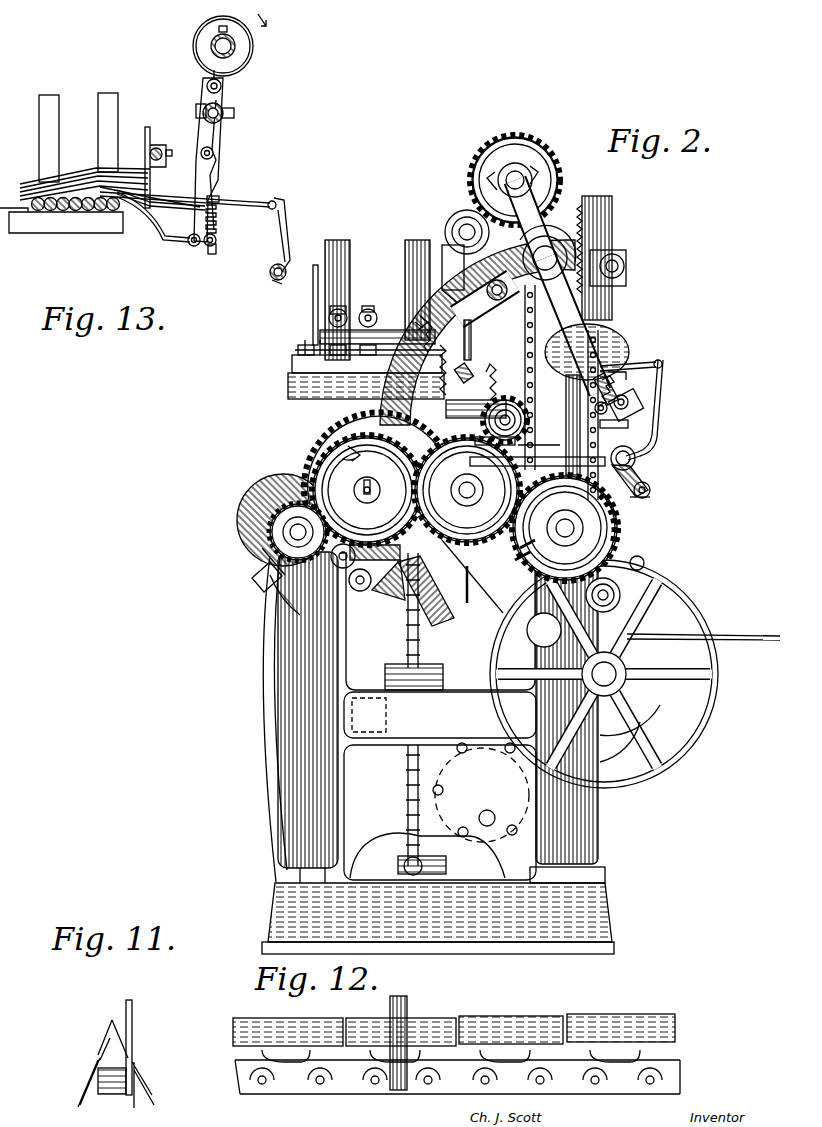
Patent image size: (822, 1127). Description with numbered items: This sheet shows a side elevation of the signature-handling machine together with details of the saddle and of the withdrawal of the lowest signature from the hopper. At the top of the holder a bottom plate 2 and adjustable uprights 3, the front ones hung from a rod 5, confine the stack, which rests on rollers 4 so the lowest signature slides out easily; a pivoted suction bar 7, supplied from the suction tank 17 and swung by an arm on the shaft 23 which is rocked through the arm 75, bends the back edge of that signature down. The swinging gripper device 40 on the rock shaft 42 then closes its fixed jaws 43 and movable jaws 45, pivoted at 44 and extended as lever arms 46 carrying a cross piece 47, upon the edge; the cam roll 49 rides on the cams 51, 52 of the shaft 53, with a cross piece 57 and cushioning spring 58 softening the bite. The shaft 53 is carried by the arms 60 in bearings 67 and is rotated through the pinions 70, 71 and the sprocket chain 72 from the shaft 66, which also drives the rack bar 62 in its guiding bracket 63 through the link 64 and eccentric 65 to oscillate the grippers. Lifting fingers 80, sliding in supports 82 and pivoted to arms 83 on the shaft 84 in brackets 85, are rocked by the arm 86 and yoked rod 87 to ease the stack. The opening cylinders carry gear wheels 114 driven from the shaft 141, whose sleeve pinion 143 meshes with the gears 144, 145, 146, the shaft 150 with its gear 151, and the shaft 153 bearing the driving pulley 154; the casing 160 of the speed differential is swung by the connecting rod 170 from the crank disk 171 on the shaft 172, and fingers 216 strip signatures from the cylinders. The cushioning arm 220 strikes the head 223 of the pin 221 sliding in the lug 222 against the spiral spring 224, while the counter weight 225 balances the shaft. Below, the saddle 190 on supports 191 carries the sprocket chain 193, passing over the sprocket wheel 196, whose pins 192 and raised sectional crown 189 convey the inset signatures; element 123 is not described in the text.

In FIG. 13, the bottom plate 2 is at (85, 230).
In FIG. 2, the uprights 3 is at (406, 252).
In FIG. 13, the uprights 3 is at (52, 128).
In FIG. 2, the rollers 4 is at (300, 355).
In FIG. 13, the rod 5 is at (158, 146).
In FIG. 2, the bar 7 is at (450, 400).
In FIG. 2, the suction tank 17 is at (456, 766).
In FIG. 2, the shaft 23 is at (462, 228).
In FIG. 13, the swinging gripper device 40 is at (200, 182).
In FIG. 13, the rock shaft 42 is at (224, 116).
In FIG. 2, the gripper jaws 43 is at (537, 430).
In FIG. 13, the gripper jaws 43 is at (161, 204).
In FIG. 2, the pivot 44 is at (614, 434).
In FIG. 13, the pivot 44 is at (190, 245).
In FIG. 2, the movable jaws 45 is at (570, 428).
In FIG. 13, the movable jaws 45 is at (170, 238).
In FIG. 13, the lever arms 46 is at (206, 246).
In FIG. 2, the cross piece 47 is at (645, 392).
In FIG. 13, the cross piece 47 is at (216, 242).
In FIG. 13, the cam roll 49 is at (206, 82).
In FIG. 13, the cam 51 is at (196, 44).
In FIG. 13, the cam 52 is at (265, 52).
In FIG. 2, the shaft 53 is at (508, 180).
In FIG. 13, the shaft 53 is at (208, 50).
In FIG. 13, the cross piece 57 is at (220, 197).
In FIG. 2, the cushioning spring 58 is at (625, 386).
In FIG. 13, the cushioning spring 58 is at (218, 220).
In FIG. 13, the arms 60 is at (232, 88).
In FIG. 2, the rack bar 62 is at (606, 214).
In FIG. 2, the guiding bracket 63 is at (624, 258).
In FIG. 2, the link 64 is at (570, 388).
In FIG. 2, the eccentric 65 is at (625, 522).
In FIG. 2, the shaft 66 is at (564, 526).
In FIG. 2, the bearings 67 is at (528, 170).
In FIG. 2, the pinion 70 is at (560, 253).
In FIG. 2, the pinion 71 is at (500, 146).
In FIG. 2, the sprocket chain 72 is at (534, 348).
In FIG. 2, the arm 75 is at (452, 244).
In FIG. 2, the lifting fingers 80 is at (618, 367).
In FIG. 13, the lifting fingers 80 is at (248, 200).
In FIG. 2, the supports 82 is at (499, 301).
In FIG. 2, the arms 83 is at (656, 414).
In FIG. 13, the arms 83 is at (292, 240).
In FIG. 2, the shaft 84 is at (634, 452).
In FIG. 13, the shaft 84 is at (270, 274).
In FIG. 2, the brackets 85 is at (624, 481).
In FIG. 2, the arm 86 is at (650, 482).
In FIG. 2, the yoked rod 87 is at (630, 500).
In FIG. 2, the gear wheel 114 is at (322, 438).
In FIG. 2, the guard 123 is at (266, 648).
In FIG. 2, the shaft 141 is at (288, 540).
In FIG. 2, the pinion 143 is at (250, 534).
In FIG. 2, the gear 144 is at (310, 466).
In FIG. 2, the gear 145 is at (462, 548).
In FIG. 2, the gear 146 is at (520, 549).
In FIG. 2, the shaft 150 is at (616, 592).
In FIG. 2, the gear 151 is at (644, 560).
In FIG. 2, the shaft 153 is at (610, 680).
In FIG. 2, the driving pulley 154 is at (672, 766).
In FIG. 2, the casing 160 is at (262, 503).
In FIG. 2, the connecting rod 170 is at (422, 588).
In FIG. 2, the crank disk 171 is at (425, 442).
In FIG. 2, the shaft 172 is at (467, 488).
In FIG. 11, the crown 189 is at (104, 1048).
In FIG. 12, the crown 189 is at (373, 1028).
In FIG. 11, the saddle 190 is at (84, 1090).
In FIG. 2, the supports 191 is at (400, 648).
In FIG. 11, the pins 192 is at (134, 1018).
In FIG. 12, the pins 192 is at (408, 1012).
In FIG. 2, the sprocket chain 193 is at (407, 806).
In FIG. 11, the sprocket chain 193 is at (140, 1080).
In FIG. 12, the sprocket chain 193 is at (405, 1084).
In FIG. 2, the sprocket bearing wheel 196 is at (404, 860).
In FIG. 2, the fingers 216 is at (470, 600).
In FIG. 2, the arm 220 is at (576, 333).
In FIG. 2, the pin 221 is at (440, 350).
In FIG. 2, the lug 222 is at (408, 312).
In FIG. 2, the head 223 is at (455, 366).
In FIG. 2, the spiral spring 224 is at (470, 342).
In FIG. 2, the counter weight 225 is at (625, 344).